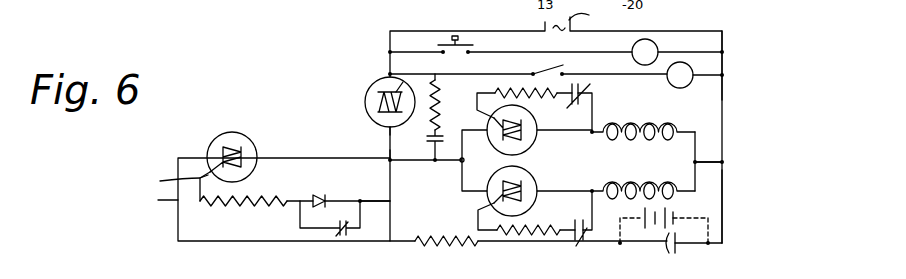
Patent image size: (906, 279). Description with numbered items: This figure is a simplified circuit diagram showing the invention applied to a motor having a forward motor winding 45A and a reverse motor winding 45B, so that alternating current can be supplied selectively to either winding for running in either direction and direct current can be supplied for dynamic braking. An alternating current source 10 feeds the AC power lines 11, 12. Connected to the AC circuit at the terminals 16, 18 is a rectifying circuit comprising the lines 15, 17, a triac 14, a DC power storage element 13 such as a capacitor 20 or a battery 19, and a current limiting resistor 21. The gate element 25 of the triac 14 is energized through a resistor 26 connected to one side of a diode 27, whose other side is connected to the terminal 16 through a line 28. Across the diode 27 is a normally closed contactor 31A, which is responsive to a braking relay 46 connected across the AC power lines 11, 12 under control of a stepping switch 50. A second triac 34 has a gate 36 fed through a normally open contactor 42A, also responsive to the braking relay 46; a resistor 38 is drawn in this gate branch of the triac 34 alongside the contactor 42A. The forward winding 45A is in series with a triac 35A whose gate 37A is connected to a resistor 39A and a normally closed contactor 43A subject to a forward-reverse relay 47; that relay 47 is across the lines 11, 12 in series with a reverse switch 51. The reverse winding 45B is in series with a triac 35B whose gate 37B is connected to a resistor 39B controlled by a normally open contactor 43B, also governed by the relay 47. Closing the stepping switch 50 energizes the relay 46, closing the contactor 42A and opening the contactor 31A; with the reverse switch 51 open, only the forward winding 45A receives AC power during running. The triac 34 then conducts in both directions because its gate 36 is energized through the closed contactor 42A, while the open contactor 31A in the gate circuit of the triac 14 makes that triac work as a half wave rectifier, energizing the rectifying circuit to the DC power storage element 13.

The alternating current source 10 is at (592, 17).
The AC power line 11 is at (388, 134).
The AC power line 12 is at (724, 105).
The DC power storage element 13 is at (659, 252).
The triac 14 is at (230, 133).
The line 15 is at (155, 200).
The terminal 16 is at (388, 157).
The line 17 is at (723, 205).
The terminal 18 is at (725, 163).
The battery 19 is at (641, 210).
The capacitor 20 is at (680, 254).
The current limiting resistor 21 is at (431, 250).
The gate element 25 is at (170, 182).
The resistor 26 is at (227, 213).
The diode 27 is at (323, 185).
The line 28 is at (389, 182).
The normally closed contactor 31A is at (352, 231).
The triac 34 is at (368, 87).
The triac 35A is at (471, 148).
The triac 35B is at (469, 171).
The gate 36 is at (403, 82).
The gate 37A is at (484, 119).
The gate 37B is at (480, 208).
The resistor 38 is at (441, 107).
The resistor 39A is at (509, 92).
The resistor 39B is at (522, 240).
The normally open contactor 42A is at (447, 144).
The normally closed contactor 43A is at (598, 103).
The normally open contactor 43B is at (577, 242).
The forward motor winding 45A is at (651, 123).
The reverse motor winding 45B is at (610, 184).
The braking relay 46 is at (655, 44).
The forward-reverse relay 47 is at (690, 85).
The stepping switch 50 is at (474, 45).
The reverse switch 51 is at (545, 70).